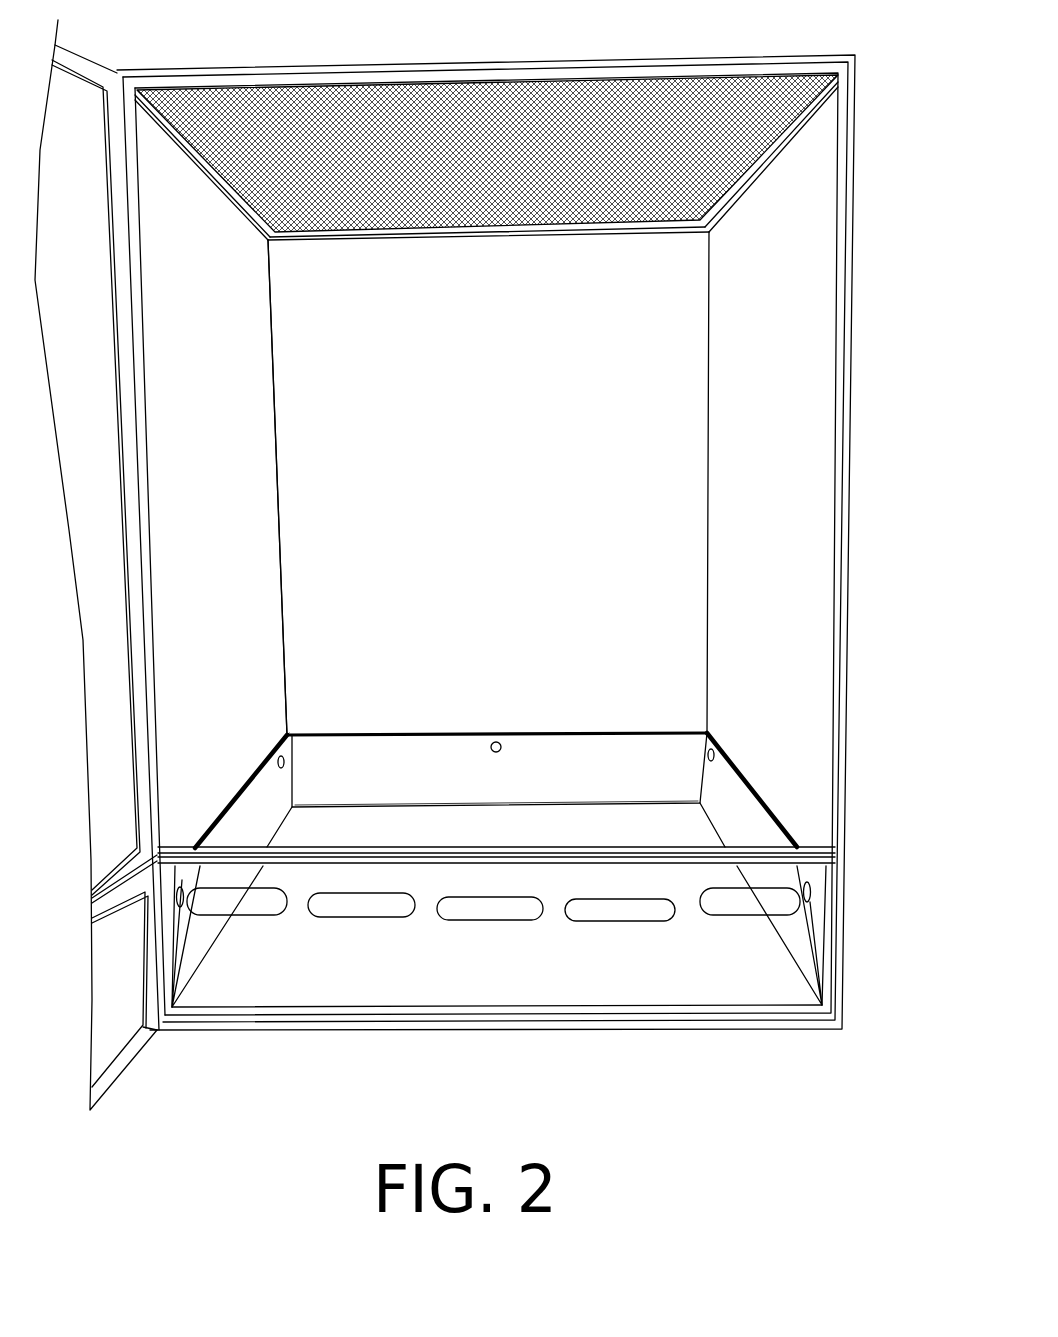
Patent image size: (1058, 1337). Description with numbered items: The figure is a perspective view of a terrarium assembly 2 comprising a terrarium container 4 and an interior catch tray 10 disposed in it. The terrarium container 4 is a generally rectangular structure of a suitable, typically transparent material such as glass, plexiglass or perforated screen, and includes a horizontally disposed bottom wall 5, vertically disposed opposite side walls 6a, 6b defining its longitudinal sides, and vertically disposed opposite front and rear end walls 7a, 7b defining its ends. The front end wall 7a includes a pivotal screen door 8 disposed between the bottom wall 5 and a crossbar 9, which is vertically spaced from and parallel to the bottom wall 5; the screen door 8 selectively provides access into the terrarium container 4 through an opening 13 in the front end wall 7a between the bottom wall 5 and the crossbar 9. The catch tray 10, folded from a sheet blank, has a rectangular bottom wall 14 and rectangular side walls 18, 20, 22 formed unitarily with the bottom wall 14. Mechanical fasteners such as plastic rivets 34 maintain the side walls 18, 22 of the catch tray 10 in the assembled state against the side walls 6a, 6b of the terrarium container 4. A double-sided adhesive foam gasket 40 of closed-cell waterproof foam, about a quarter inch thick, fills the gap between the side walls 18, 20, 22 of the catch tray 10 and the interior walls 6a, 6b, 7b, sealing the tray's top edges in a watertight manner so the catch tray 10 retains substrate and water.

The terrarium assembly 2 is at (902, 464).
The terrarium container 4 is at (860, 570).
The bottom wall 5 is at (415, 828).
The side wall 6a is at (183, 338).
The side wall 6b is at (795, 338).
The front end wall 7a is at (213, 660).
The rear end wall 7b is at (510, 483).
The screen door 8 is at (110, 995).
The crossbar 9 is at (627, 847).
The catch tray 10 is at (474, 828).
The opening 13 is at (440, 1003).
The bottom wall 14 is at (353, 828).
The side wall 18 is at (232, 832).
The side wall 20 is at (625, 758).
The side wall 22 is at (740, 795).
The rivets 34 is at (276, 746).
The adhesive foam gasket 40 is at (245, 785).